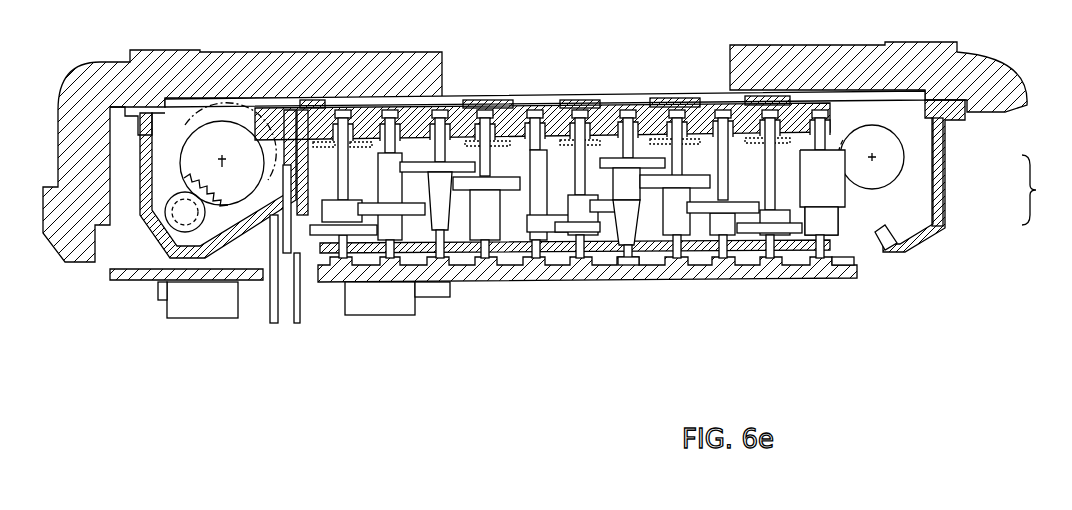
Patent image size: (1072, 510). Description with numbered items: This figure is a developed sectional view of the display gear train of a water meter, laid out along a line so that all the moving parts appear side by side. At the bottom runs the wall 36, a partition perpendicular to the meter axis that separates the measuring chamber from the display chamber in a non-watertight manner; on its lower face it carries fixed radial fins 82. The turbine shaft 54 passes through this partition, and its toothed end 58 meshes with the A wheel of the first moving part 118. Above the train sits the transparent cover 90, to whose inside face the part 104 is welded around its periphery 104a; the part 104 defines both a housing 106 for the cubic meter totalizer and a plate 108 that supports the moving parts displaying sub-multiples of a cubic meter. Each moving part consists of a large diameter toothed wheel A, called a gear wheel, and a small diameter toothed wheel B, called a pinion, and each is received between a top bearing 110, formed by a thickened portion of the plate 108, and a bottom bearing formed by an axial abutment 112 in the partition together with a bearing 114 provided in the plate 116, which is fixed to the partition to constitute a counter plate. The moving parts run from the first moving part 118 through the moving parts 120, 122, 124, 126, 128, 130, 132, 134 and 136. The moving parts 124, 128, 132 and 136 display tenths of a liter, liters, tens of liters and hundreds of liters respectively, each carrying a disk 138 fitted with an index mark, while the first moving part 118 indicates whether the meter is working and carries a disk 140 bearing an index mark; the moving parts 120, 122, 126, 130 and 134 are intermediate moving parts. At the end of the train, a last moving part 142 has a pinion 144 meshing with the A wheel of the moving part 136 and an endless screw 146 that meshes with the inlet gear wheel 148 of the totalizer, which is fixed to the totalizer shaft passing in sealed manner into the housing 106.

The periphery 104a is at (120, 108).
The housing 106 is at (158, 133).
The part 104 is at (283, 140).
The small diameter toothed wheel B is at (333, 175).
The disk 140 is at (370, 100).
The disk 138 is at (467, 110).
The bearing 110 is at (540, 110).
The plate 108 is at (605, 108).
The transparent cover 90 is at (827, 65).
The inlet gear wheel 148 is at (893, 157).
The endless screw 146 is at (943, 187).
The pinion 144 is at (845, 207).
The last moving part 142 is at (1045, 190).
The plate 116 is at (845, 250).
The wall 36 is at (123, 280).
The fixed radial fins 82 is at (183, 302).
The end of the shaft 58 is at (270, 250).
The shaft 54 is at (277, 308).
The large diameter toothed wheel A is at (297, 303).
The first moving part 118 is at (343, 191).
The intermediate moving part 120 is at (390, 278).
The intermediate moving part 122 is at (440, 264).
The moving part 124 is at (487, 264).
The intermediate moving part 126 is at (525, 264).
The bearing 114 is at (573, 264).
The moving part 128 is at (603, 264).
The axial abutment 112 is at (622, 270).
The intermediate moving part 130 is at (660, 264).
The moving part 132 is at (690, 268).
The intermediate moving part 134 is at (730, 242).
The moving part 136 is at (909, 242).